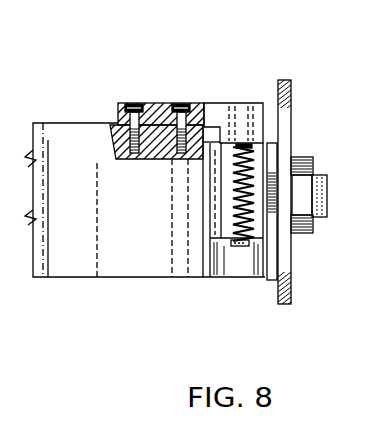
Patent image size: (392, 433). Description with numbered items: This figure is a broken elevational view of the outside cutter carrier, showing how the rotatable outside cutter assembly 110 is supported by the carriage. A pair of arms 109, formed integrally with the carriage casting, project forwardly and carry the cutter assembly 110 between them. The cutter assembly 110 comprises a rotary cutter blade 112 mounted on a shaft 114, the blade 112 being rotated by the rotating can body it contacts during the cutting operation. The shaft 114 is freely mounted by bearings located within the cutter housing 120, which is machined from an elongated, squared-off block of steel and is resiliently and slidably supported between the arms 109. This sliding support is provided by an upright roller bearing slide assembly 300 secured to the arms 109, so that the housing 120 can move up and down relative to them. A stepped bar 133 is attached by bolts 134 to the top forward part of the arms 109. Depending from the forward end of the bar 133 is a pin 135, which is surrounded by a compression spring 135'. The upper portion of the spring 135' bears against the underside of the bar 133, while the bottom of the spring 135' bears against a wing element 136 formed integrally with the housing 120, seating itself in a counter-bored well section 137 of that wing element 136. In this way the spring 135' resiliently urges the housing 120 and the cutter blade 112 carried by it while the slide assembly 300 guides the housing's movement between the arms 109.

The arms 109 is at (147, 200).
The bolts 134 is at (176, 102).
The stepped bar 133 is at (213, 112).
The cutter housing 120 is at (210, 213).
The pin 135 is at (293, 151).
The compression spring 135' is at (299, 192).
The counter-bored well section 137 is at (238, 278).
The wing element 136 is at (258, 278).
The shaft 114 is at (267, 196).
The rotary cutter blade 112 is at (291, 270).
The outside cutter assembly 110 is at (327, 212).
The roller bearing slide assembly 300 is at (187, 250).